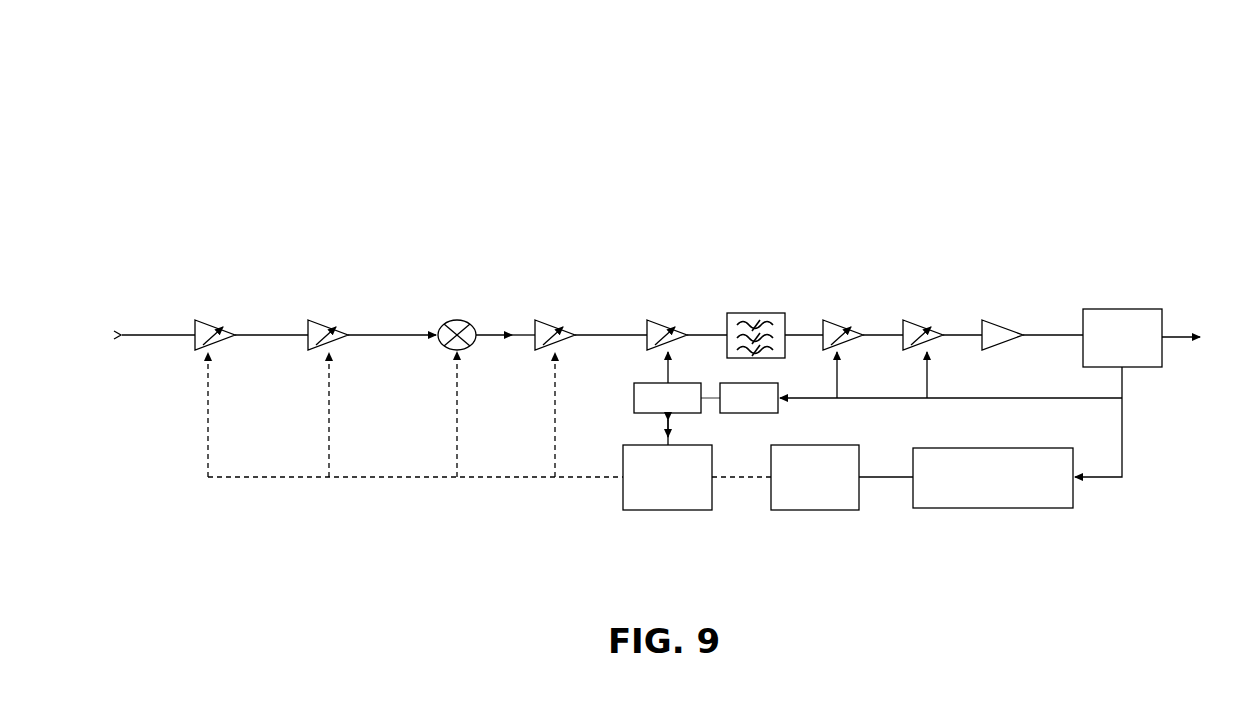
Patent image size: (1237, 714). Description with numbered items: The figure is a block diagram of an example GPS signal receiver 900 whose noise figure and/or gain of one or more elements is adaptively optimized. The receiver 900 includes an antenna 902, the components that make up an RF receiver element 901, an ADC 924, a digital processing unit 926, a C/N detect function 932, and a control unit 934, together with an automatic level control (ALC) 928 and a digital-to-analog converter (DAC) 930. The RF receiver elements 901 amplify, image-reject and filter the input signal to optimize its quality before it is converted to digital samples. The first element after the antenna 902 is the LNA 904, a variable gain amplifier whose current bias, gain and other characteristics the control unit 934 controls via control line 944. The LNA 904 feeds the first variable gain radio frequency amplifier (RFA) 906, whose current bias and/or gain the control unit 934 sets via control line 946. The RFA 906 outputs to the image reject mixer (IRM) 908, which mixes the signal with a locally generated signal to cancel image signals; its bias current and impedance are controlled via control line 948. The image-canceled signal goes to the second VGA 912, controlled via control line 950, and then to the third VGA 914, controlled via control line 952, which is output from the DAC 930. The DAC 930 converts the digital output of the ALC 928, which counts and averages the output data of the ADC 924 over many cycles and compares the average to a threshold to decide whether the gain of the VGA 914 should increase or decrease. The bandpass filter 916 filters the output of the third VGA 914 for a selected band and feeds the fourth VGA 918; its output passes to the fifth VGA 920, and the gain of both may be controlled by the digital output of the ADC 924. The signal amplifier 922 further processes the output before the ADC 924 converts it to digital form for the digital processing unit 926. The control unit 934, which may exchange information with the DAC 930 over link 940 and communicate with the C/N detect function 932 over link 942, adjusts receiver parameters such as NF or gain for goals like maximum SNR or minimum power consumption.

The GPS signal receiver 900 is at (922, 142).
The RF receiver element 901 is at (389, 216).
The antenna 902 is at (64, 314).
The LNA 904 is at (199, 290).
The variable gain radio frequency amplifier (RFA) 906 is at (311, 290).
The image reject mixer (IRM) 908 is at (437, 290).
The second variable gain amplifier (VGA) 912 is at (546, 317).
The third VGA 914 is at (661, 319).
The bandpass filter 916 is at (750, 313).
The fourth VGA 918 is at (833, 320).
The fifth VGA 920 is at (912, 322).
The signal amplifier 922 is at (992, 322).
The ADC 924 is at (1120, 309).
The digital processing unit 926 is at (995, 508).
The automatic level control (ALC) 928 is at (776, 412).
The digital-to-analog converter (DAC) 930 is at (634, 398).
The C/N detect function 932 is at (805, 510).
The control unit 934 is at (660, 510).
The control signal between DAC and control unit 940 is at (672, 425).
The control signal between control unit and C/No detector 942 is at (741, 480).
The control line 944 is at (207, 418).
The control line 946 is at (328, 418).
The control line 948 is at (456, 420).
The control line 950 is at (554, 420).
The control line 952 is at (669, 368).